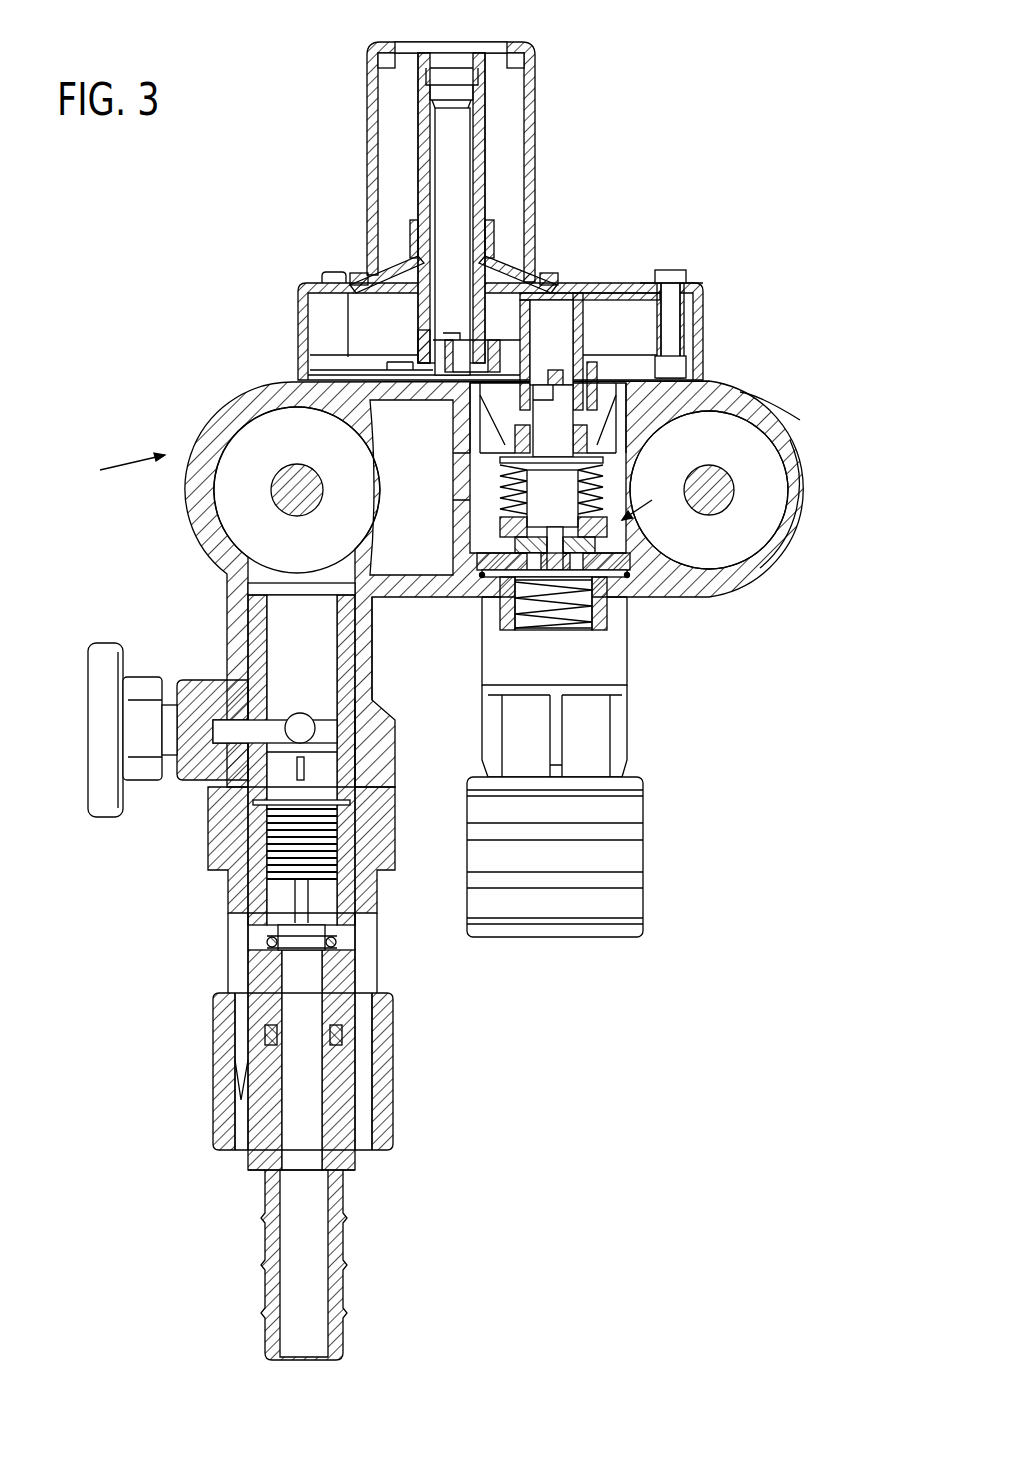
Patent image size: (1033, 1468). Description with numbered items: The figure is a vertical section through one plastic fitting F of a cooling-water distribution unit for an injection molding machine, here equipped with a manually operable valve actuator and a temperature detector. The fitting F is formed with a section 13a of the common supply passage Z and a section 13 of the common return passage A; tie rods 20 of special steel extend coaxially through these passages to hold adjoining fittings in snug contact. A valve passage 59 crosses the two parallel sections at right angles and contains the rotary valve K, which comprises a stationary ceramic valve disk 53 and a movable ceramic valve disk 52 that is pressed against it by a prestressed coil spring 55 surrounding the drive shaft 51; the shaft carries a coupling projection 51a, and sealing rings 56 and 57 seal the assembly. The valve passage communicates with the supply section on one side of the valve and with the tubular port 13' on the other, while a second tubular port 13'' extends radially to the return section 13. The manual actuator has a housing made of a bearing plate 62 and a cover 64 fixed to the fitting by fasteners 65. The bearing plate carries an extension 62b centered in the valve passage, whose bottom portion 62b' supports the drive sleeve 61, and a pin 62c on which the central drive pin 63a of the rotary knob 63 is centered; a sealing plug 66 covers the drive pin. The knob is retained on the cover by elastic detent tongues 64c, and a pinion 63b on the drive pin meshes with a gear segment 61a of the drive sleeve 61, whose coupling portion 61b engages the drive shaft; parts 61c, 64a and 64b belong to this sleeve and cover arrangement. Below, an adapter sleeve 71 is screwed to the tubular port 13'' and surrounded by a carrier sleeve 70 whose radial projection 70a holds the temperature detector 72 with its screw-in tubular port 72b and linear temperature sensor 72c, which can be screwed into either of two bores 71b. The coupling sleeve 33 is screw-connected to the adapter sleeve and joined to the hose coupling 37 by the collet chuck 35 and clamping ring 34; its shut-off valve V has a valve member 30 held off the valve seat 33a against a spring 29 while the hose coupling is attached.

The return passage section 13 is at (459, 584).
The tubular port 13' is at (605, 641).
The tubular port 13'' is at (400, 648).
The supply passage section 13a is at (762, 568).
The tie rod 20 is at (303, 483).
The spring 29 is at (560, 615).
The valve member 30 is at (300, 958).
The coupling sleeve 33 is at (620, 735).
The valve seat 33a is at (265, 975).
The clamping ring 34 is at (600, 862).
The collet chuck 35 is at (345, 1025).
The hose coupling 37 is at (335, 1205).
The drive shaft 51 is at (560, 441).
The coupling projection 51a is at (478, 548).
The movable ceramic valve disk 52 is at (608, 545).
The stationary ceramic valve disk 53 is at (618, 560).
The prestressed coil spring 55 is at (606, 478).
The sealing ring 56 is at (552, 520).
The sealing ring 57 is at (740, 392).
The valve passage 59 is at (485, 495).
The drive sleeve 61 is at (590, 335).
The gear segment 61a is at (582, 292).
The coupling portion 61b is at (546, 368).
The cup opening 61c is at (600, 355).
The bearing plate 62 is at (338, 350).
The extension 62b is at (512, 418).
The bottom portion 62b' is at (507, 435).
The pin 62c is at (450, 345).
The rotary knob 63 is at (530, 64).
The central drive pin 63a is at (480, 128).
The pinion 63b is at (425, 328).
The cover 64 is at (302, 280).
The diaphragm flange 64a is at (385, 262).
The diaphragm edge 64b is at (675, 272).
The elastic detent tongue 64c is at (540, 262).
The fastener 65 is at (330, 272).
The sealing plug 66 is at (445, 32).
The carrier sleeve 70 is at (378, 746).
The radial projection 70a is at (240, 732).
The adapter sleeve 71 is at (248, 622).
The bore 71b is at (300, 746).
The temperature detector 72 is at (147, 675).
The screw-in tubular port 72b is at (292, 720).
The linear temperature sensor 72c is at (357, 762).
The return passage A is at (302, 449).
The supply passage Z is at (712, 449).
The fitting F is at (122, 470).
The rotary valve K is at (645, 496).
The shut-off valve V is at (228, 1038).